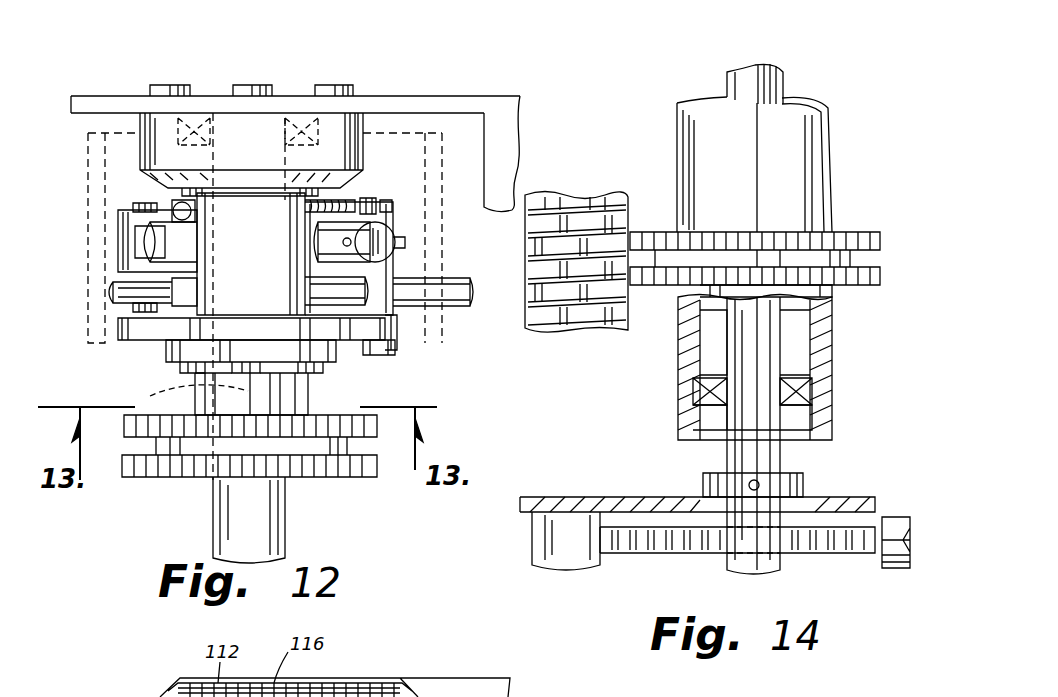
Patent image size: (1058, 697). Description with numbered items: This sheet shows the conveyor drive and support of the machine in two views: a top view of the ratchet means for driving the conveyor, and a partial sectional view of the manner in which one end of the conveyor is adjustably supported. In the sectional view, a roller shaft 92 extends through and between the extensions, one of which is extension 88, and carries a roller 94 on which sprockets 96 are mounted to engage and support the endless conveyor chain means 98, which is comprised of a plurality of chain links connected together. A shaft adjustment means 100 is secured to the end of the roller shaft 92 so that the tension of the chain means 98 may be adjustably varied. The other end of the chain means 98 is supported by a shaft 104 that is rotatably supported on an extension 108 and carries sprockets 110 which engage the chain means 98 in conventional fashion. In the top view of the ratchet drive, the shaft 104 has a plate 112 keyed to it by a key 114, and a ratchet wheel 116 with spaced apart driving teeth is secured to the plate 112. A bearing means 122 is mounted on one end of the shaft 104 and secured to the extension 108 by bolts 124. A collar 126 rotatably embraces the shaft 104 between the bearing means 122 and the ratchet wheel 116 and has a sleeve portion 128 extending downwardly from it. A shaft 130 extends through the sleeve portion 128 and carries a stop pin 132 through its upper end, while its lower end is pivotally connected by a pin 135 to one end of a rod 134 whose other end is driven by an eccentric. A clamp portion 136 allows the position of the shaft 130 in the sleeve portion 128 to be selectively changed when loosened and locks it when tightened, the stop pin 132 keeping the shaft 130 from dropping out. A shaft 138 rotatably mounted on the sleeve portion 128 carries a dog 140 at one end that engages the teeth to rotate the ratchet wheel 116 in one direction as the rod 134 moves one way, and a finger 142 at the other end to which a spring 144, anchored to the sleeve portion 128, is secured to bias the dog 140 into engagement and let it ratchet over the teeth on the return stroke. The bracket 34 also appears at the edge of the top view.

In FIG. 12, the mounting bracket 34 is at (520, 110).
In FIG. 14, the extension 88 is at (855, 498).
In FIG. 14, the roller shaft 92 is at (740, 450).
In FIG. 14, the roller 94 is at (835, 150).
In FIG. 14, the sprockets 96 is at (840, 245).
In FIG. 14, the endless conveyor chain means 98 is at (586, 197).
In FIG. 14, the shaft adjustment means 100 is at (873, 560).
In FIG. 12, the shaft 104 is at (283, 520).
In FIG. 12, the extension 108 is at (430, 97).
In FIG. 12, the sprockets 110 is at (178, 467).
In FIG. 12, the plate 112 is at (320, 350).
In FIG. 12, the key 114 is at (184, 396).
In FIG. 12, the ratchet wheel 116 is at (145, 330).
In FIG. 12, the bearing means 122 is at (350, 130).
In FIG. 12, the bolts 124 is at (170, 85).
In FIG. 12, the collar 126 is at (266, 272).
In FIG. 12, the sleeve portion 128 is at (325, 270).
In FIG. 12, the shaft 130 is at (155, 228).
In FIG. 12, the stop pin 132 is at (405, 243).
In FIG. 12, the rod 134 is at (450, 300).
In FIG. 12, the pin 135 is at (140, 205).
In FIG. 12, the clamp portion 136 is at (185, 215).
In FIG. 12, the shaft 138 is at (383, 350).
In FIG. 12, the dog 140 is at (395, 340).
In FIG. 12, the finger 142 is at (395, 205).
In FIG. 12, the spring 144 is at (345, 200).